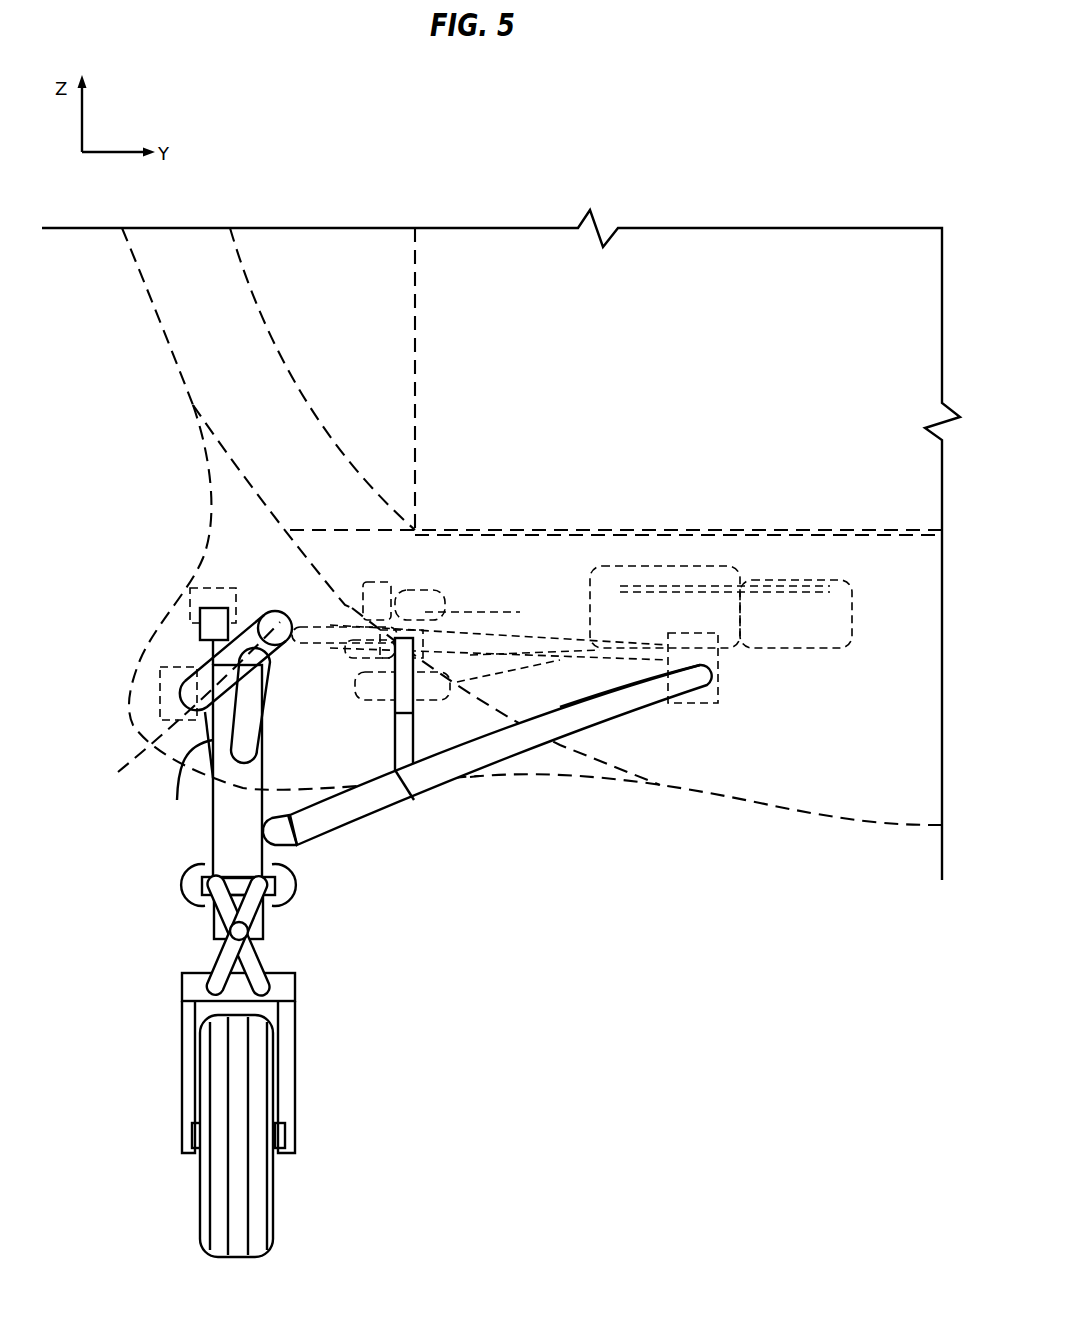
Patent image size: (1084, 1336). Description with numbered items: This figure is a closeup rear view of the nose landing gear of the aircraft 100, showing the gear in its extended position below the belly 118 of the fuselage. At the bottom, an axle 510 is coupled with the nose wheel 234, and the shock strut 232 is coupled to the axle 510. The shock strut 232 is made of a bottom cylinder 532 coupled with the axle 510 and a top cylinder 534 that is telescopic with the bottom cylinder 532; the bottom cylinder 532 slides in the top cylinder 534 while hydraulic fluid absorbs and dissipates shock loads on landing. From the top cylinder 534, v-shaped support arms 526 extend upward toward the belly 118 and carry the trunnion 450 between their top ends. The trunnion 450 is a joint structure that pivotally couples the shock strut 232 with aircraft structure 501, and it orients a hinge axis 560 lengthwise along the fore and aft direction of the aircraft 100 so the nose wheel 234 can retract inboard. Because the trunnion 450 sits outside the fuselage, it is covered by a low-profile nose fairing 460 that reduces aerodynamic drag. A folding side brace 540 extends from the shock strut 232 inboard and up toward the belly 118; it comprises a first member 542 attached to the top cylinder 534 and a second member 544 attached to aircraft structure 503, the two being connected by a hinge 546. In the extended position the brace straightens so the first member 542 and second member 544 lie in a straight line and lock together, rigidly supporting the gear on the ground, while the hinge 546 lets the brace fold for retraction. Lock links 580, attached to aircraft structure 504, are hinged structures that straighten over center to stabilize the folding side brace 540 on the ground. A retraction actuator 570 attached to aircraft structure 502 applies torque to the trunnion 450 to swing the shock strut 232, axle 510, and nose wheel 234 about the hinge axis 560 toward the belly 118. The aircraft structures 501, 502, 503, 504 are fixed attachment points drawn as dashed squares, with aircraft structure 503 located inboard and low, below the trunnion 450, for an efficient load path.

The aircraft 100 is at (501, 479).
The belly 118 is at (706, 829).
The shock strut 232 is at (308, 932).
The nose wheel 234 is at (276, 1136).
The trunnion 450 is at (173, 694).
The nose fairing 460 is at (275, 597).
The aircraft structure 501 is at (130, 707).
The aircraft structure 502 is at (230, 584).
The aircraft structure 503 is at (722, 687).
The aircraft structure 504 is at (370, 677).
The axle 510 is at (277, 1077).
The support arms 526 is at (215, 741).
The bottom cylinder 532 is at (195, 935).
The top cylinder 534 is at (191, 775).
The folding side brace 540 is at (501, 762).
The first member 542 is at (328, 841).
The second member 544 is at (630, 711).
The hinge 546 is at (434, 829).
The hinge axis 560 is at (176, 727).
The retraction actuator 570 is at (179, 607).
The lock links 580 is at (356, 707).